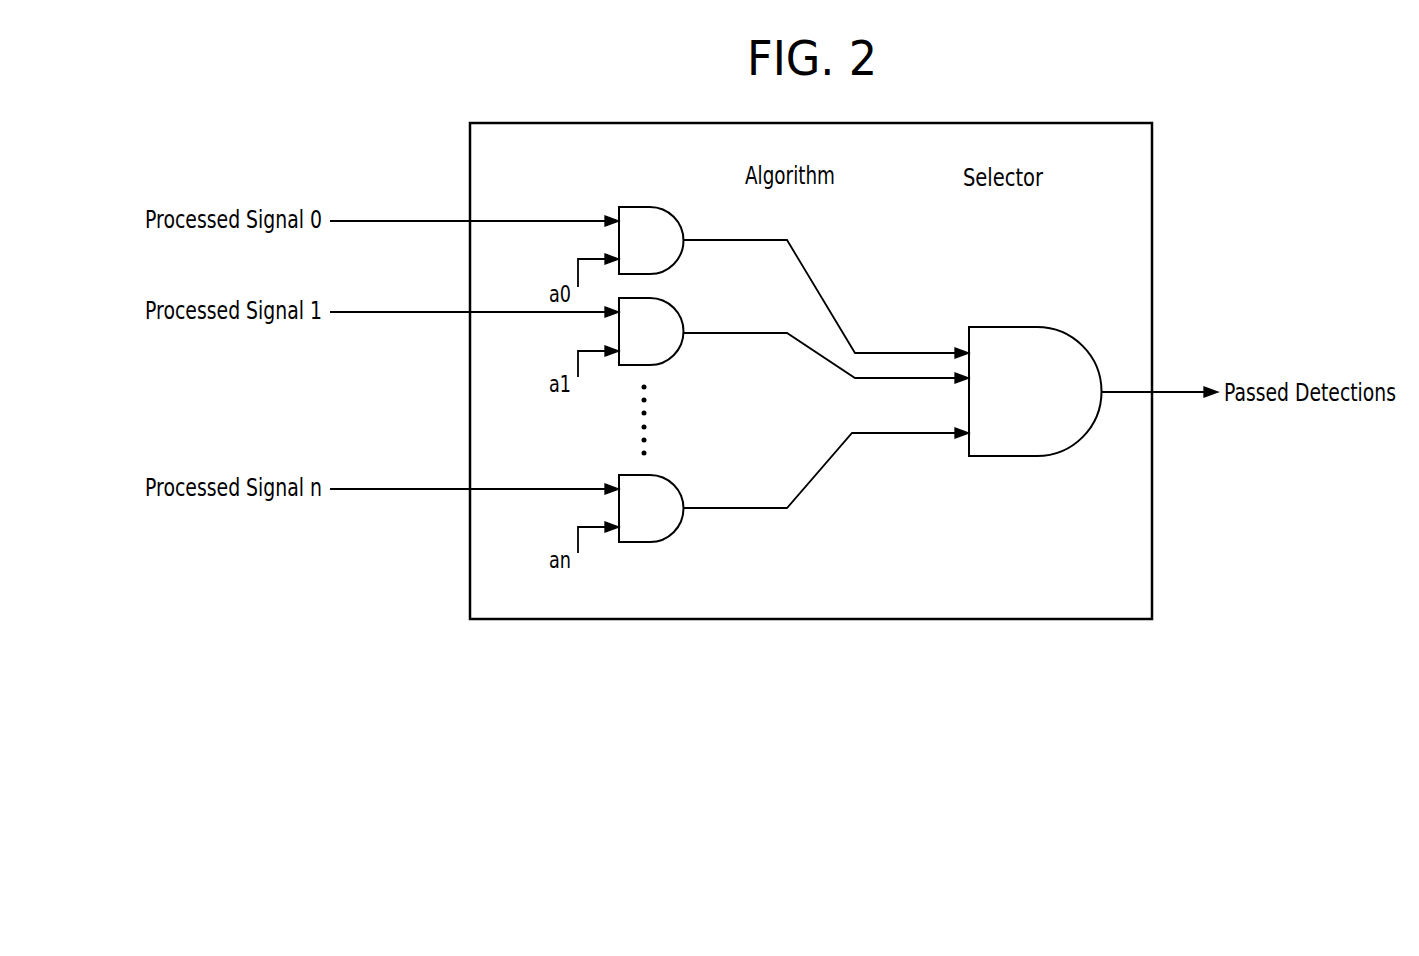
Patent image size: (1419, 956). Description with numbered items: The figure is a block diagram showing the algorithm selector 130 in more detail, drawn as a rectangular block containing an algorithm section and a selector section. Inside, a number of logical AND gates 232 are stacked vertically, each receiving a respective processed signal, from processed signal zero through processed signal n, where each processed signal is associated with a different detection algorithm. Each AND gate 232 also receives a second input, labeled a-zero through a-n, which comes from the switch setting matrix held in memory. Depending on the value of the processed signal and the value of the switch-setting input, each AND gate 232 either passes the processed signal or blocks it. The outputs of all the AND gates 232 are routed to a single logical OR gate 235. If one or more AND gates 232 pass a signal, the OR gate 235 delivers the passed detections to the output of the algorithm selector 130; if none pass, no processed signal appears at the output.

The algorithm selector 130 is at (1068, 620).
The logical AND gate 232 is at (663, 206).
The logical OR gate 235 is at (1066, 330).